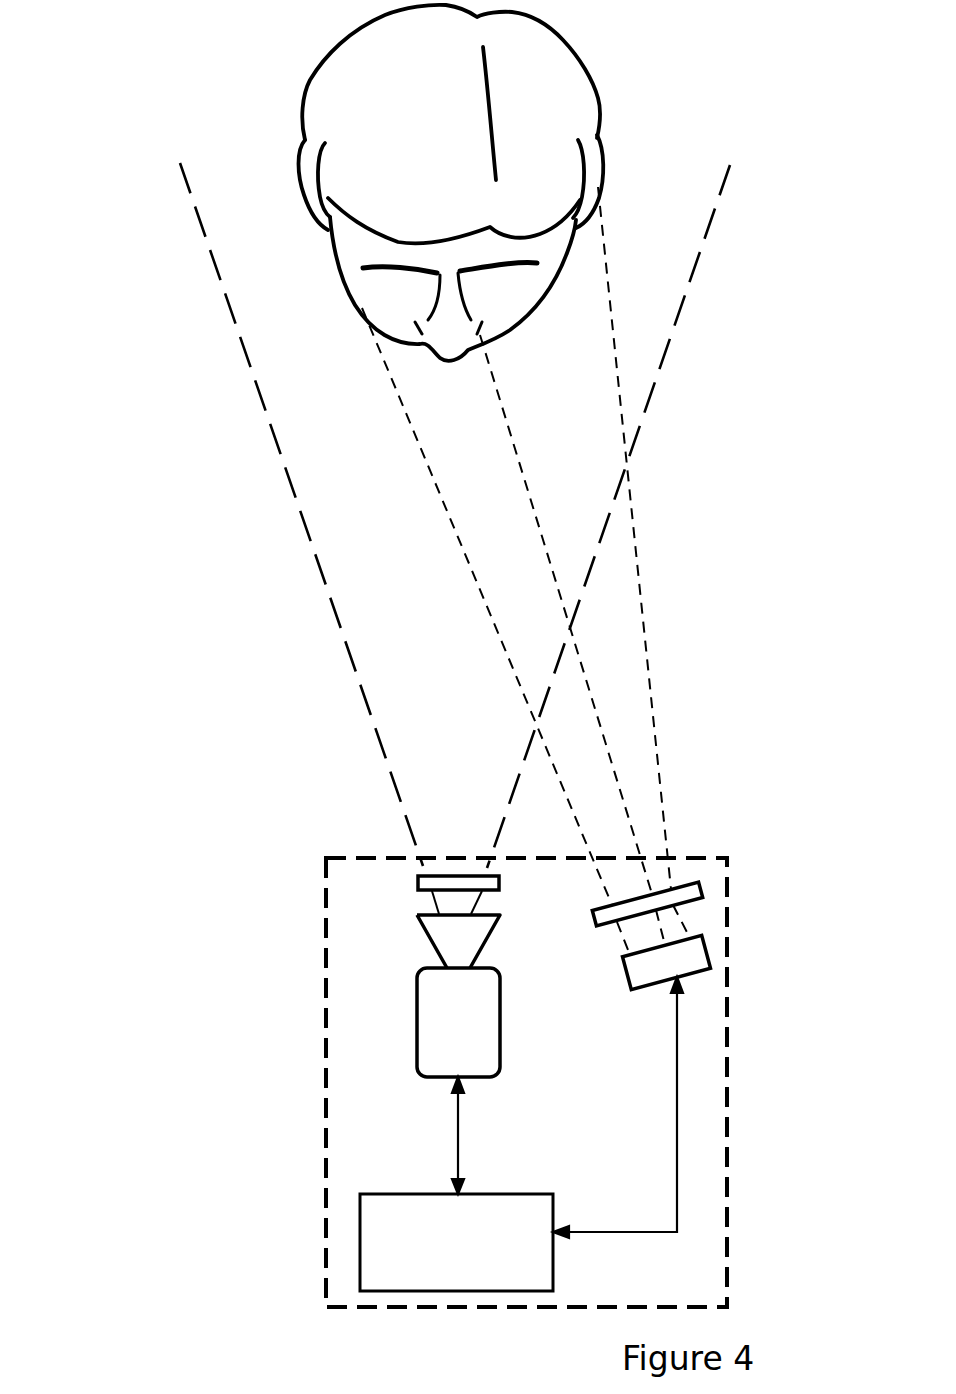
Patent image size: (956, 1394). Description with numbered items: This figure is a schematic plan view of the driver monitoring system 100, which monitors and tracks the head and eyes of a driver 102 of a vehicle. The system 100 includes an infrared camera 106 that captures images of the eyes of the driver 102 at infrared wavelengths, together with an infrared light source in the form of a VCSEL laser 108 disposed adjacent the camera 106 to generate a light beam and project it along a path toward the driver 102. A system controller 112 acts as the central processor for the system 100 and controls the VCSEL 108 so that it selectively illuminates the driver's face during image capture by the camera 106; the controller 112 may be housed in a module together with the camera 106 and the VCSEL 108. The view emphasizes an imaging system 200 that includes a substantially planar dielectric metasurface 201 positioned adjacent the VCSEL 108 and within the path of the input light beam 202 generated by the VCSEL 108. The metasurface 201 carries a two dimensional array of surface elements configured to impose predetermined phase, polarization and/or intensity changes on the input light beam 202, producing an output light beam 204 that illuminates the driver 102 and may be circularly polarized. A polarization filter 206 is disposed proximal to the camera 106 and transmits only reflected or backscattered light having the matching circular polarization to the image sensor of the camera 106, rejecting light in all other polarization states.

The driver monitoring system 100 is at (157, 608).
The driver 102 is at (315, 90).
The infrared camera 106 is at (493, 975).
The VCSEL laser 108 is at (708, 950).
The system controller 112 is at (510, 1193).
The imaging system 200 is at (325, 856).
The dielectric metasurface 201 is at (690, 880).
The input light beam 202 is at (686, 924).
The output light beam 204 is at (654, 722).
The polarization filter 206 is at (427, 884).